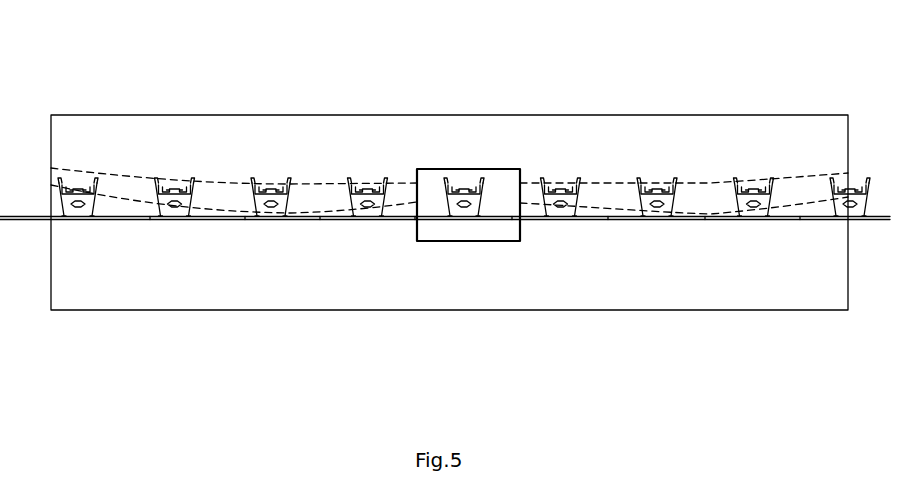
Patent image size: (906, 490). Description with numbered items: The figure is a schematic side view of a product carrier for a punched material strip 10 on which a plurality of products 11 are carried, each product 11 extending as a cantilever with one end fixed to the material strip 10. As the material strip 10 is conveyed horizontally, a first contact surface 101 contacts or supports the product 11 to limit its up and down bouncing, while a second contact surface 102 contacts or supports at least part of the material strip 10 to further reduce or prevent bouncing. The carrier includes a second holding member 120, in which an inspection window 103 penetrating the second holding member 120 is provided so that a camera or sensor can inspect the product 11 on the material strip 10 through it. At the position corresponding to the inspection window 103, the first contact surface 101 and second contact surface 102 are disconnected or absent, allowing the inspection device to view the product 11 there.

The material strip 10 is at (23, 215).
The product 11 is at (368, 185).
The first contact surface 101 is at (128, 179).
The second contact surface 102 is at (800, 202).
The inspection window 103 is at (502, 168).
The second holding member 120 is at (406, 291).